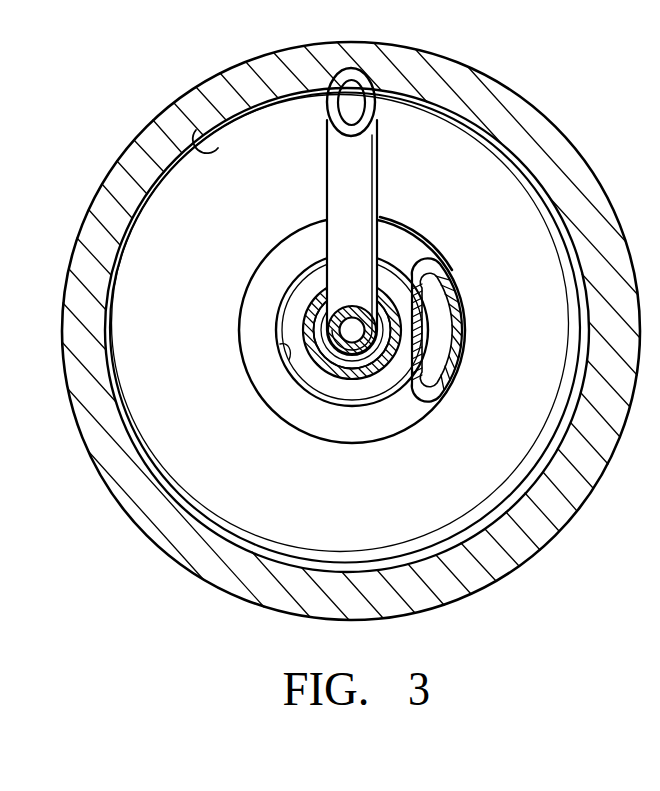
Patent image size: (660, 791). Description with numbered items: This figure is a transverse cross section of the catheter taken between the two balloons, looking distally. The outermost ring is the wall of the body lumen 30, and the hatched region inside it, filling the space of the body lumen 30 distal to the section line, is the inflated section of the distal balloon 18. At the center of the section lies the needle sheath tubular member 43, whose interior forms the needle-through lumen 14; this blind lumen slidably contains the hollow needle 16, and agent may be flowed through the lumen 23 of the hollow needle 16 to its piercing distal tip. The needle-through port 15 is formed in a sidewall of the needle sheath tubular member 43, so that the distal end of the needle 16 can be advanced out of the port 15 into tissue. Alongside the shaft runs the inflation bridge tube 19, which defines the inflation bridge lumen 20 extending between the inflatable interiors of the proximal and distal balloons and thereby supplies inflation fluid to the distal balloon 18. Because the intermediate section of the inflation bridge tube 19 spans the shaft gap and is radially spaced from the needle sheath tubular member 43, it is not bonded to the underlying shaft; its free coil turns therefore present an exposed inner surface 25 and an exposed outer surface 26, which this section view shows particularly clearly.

The needle-through lumen 14 is at (331, 354).
The needle-through port 15 is at (323, 303).
The hollow needle 16 is at (380, 352).
The distal balloon 18 is at (473, 158).
The inflation bridge tube 19 is at (413, 237).
The inflation bridge lumen 20 is at (442, 305).
The lumen of the hollow needle 23 is at (352, 330).
The exposed inner surface 25 is at (278, 370).
The exposed outer surface 26 is at (233, 328).
The body lumen 30 is at (190, 147).
The needle sheath tubular member 43 is at (353, 382).